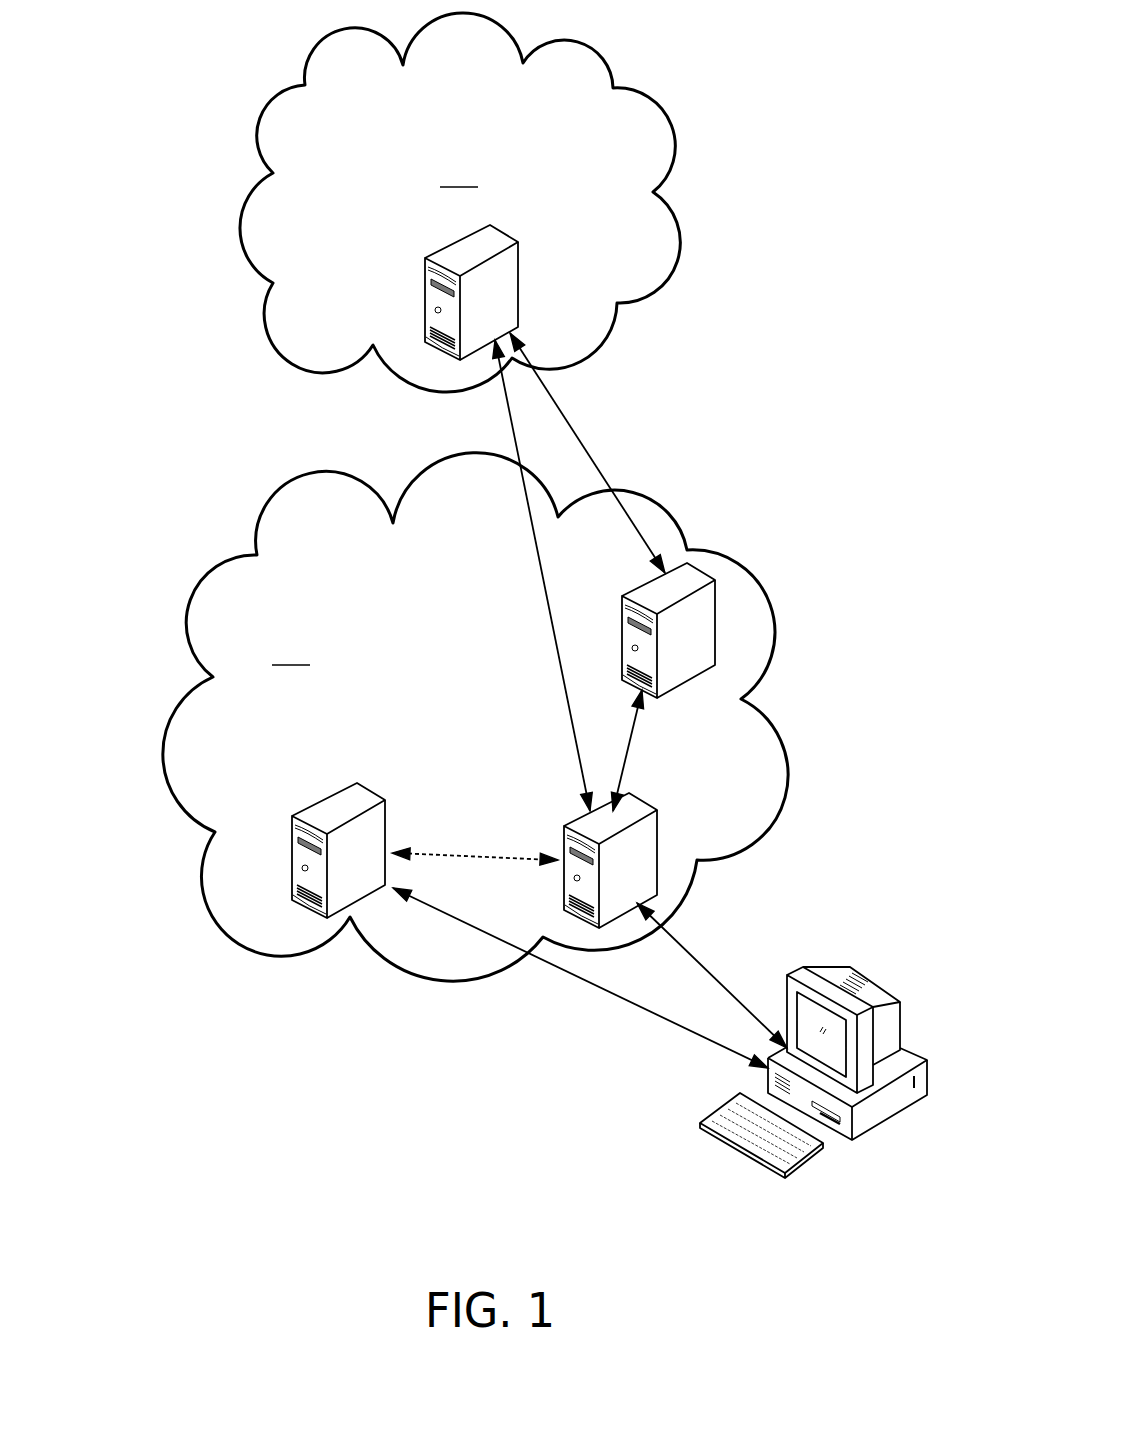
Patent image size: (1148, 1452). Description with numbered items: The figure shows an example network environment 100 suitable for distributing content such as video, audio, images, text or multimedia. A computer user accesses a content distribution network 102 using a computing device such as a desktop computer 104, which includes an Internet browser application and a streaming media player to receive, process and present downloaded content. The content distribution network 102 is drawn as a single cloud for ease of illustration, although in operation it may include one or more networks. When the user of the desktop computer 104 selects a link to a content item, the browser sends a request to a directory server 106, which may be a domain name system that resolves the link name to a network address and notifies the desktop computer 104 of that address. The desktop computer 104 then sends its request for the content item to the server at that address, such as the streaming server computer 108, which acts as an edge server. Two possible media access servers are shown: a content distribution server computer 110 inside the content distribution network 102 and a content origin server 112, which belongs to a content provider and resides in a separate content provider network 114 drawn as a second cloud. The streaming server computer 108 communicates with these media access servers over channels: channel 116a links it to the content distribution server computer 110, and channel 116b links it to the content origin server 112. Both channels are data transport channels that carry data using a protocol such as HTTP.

The network environment 100 is at (158, 90).
The content distribution network 102 is at (475, 717).
The desktop computer 104 is at (870, 1140).
The directory server 106 is at (309, 805).
The streaming server computer 108 is at (565, 826).
The content distribution server computer 110 is at (722, 608).
The content origin server 112 is at (523, 292).
The content provider network 114 is at (460, 202).
The channel 116a is at (646, 718).
The channel 116b is at (550, 604).